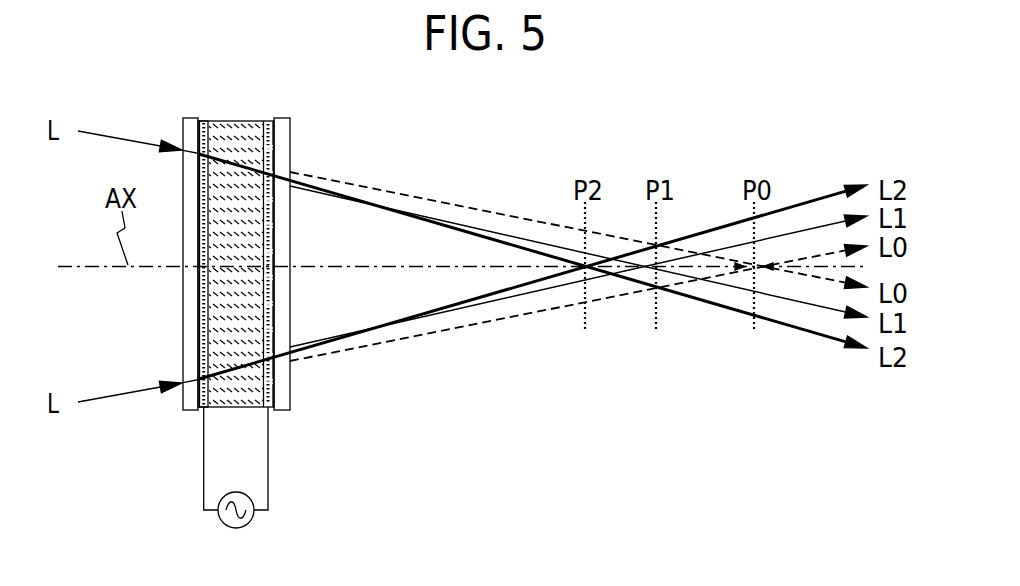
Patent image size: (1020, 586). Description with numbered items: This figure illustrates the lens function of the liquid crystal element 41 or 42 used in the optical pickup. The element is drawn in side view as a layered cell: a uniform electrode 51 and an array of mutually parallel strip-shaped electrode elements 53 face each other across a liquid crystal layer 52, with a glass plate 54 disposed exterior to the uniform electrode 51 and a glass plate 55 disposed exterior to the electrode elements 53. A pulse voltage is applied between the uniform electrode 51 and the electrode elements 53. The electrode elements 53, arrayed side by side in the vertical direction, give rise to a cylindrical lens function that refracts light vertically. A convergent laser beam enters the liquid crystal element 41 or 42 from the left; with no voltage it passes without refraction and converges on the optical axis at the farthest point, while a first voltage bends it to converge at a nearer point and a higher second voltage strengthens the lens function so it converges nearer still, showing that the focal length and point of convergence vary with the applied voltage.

The liquid crystal element 41 is at (230, 291).
The liquid crystal element 42 is at (240, 110).
The uniform electrode 51 is at (203, 395).
The liquid crystal layer 52 is at (227, 397).
The electrode elements 53 is at (282, 392).
The glass plate 54 is at (188, 390).
The glass plate 55 is at (287, 383).